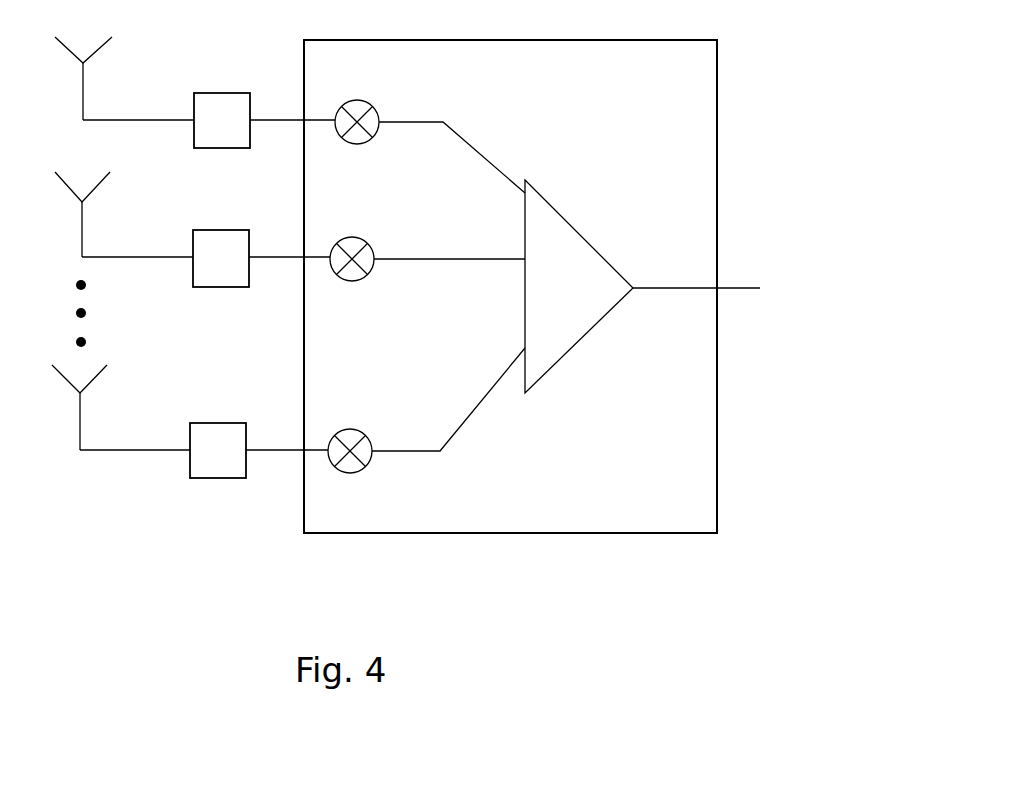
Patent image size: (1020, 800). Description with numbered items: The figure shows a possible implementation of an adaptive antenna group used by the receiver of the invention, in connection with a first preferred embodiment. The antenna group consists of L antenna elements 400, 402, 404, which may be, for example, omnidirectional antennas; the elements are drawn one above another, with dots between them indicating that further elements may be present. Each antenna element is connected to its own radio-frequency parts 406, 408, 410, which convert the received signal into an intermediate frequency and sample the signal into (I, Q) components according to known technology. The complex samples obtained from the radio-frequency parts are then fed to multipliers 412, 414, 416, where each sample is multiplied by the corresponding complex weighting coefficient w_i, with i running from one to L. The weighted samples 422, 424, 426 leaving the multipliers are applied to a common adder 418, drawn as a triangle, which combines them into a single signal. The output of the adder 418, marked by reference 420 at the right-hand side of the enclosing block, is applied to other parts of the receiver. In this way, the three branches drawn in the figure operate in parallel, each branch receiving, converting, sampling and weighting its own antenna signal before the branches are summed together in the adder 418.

The antenna element 400 is at (83, 87).
The antenna element 402 is at (82, 227).
The antenna element 404 is at (78, 422).
The radio-frequency parts 406 is at (223, 93).
The radio-frequency parts 408 is at (221, 230).
The radio-frequency parts 410 is at (220, 423).
The multiplier 412 is at (355, 145).
The multiplier 414 is at (352, 281).
The multiplier 416 is at (350, 473).
The adder 418 is at (557, 210).
The output line 420 is at (698, 291).
The multiplied sample 422 is at (470, 145).
The multiplied sample 424 is at (425, 257).
The multiplied sample 426 is at (468, 420).